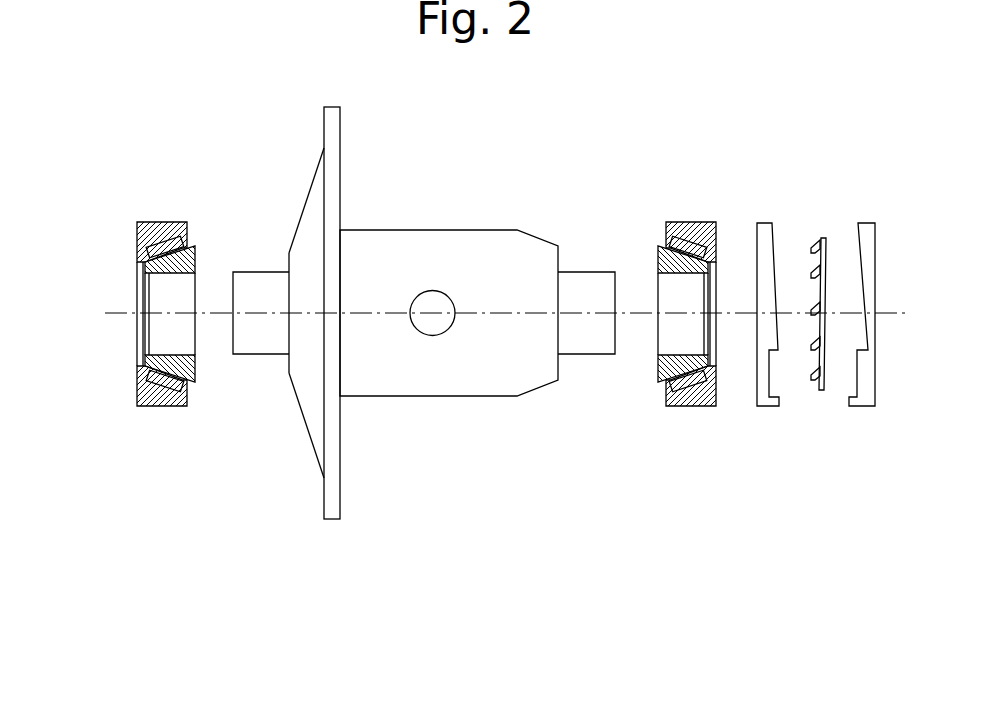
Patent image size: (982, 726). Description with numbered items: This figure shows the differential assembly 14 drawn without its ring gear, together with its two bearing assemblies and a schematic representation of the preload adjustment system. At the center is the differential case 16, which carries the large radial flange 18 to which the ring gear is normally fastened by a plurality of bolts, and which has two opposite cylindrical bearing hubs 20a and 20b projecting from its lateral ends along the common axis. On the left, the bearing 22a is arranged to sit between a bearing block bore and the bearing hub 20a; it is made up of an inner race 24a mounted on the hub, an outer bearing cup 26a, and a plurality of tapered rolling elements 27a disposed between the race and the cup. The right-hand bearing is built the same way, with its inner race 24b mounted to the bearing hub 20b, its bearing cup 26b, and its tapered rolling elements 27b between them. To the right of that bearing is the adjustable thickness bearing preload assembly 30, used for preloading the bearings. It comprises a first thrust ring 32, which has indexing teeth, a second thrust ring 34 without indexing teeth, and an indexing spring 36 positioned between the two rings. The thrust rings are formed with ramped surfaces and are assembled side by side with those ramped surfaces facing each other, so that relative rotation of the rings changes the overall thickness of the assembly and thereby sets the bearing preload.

The differential assembly 14 is at (458, 205).
The differential case 16 is at (516, 286).
The flange 18 is at (335, 515).
The bearing hub 20a is at (247, 348).
The bearing hub 20b is at (586, 348).
The bearing 22a is at (127, 318).
The inner race 24a is at (193, 257).
The inner race 24b is at (657, 366).
The bearing cup 26a is at (142, 391).
The bearing cup 26b is at (696, 222).
The tapered rolling elements 27a is at (187, 385).
The tapered rolling elements 27b is at (670, 245).
The adjustable thickness bearing preload assembly 30 is at (817, 313).
The first thrust ring 32 is at (762, 227).
The second thrust ring 34 is at (867, 228).
The indexing spring 36 is at (821, 238).